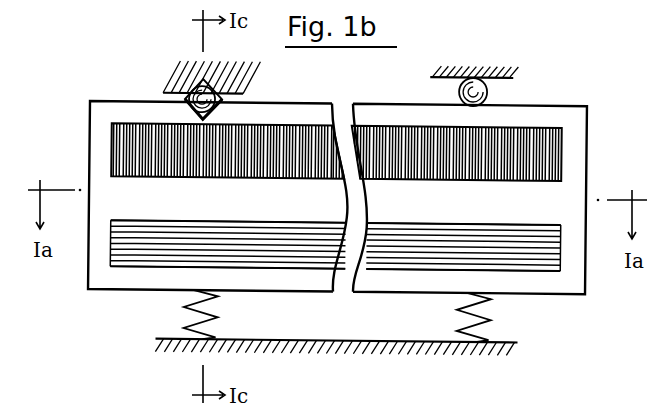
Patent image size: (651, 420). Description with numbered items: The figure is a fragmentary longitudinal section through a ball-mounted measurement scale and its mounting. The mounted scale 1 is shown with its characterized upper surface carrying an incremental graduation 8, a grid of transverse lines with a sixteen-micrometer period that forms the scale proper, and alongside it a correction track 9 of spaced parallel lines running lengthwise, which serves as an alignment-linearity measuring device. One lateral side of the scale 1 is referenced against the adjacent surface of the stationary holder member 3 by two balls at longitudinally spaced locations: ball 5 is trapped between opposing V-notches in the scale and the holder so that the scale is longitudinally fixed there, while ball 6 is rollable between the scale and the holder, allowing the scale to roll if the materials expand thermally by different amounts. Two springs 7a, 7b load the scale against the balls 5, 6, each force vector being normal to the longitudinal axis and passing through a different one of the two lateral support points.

The mounted scale 1 is at (586, 143).
The stationary holder member 3 is at (225, 71).
The ball 5 is at (188, 97).
The ball 6 is at (488, 88).
The spring 7a is at (213, 317).
The spring 7b is at (487, 314).
The incremental graduation 8 is at (556, 166).
The correction track 9 is at (562, 243).